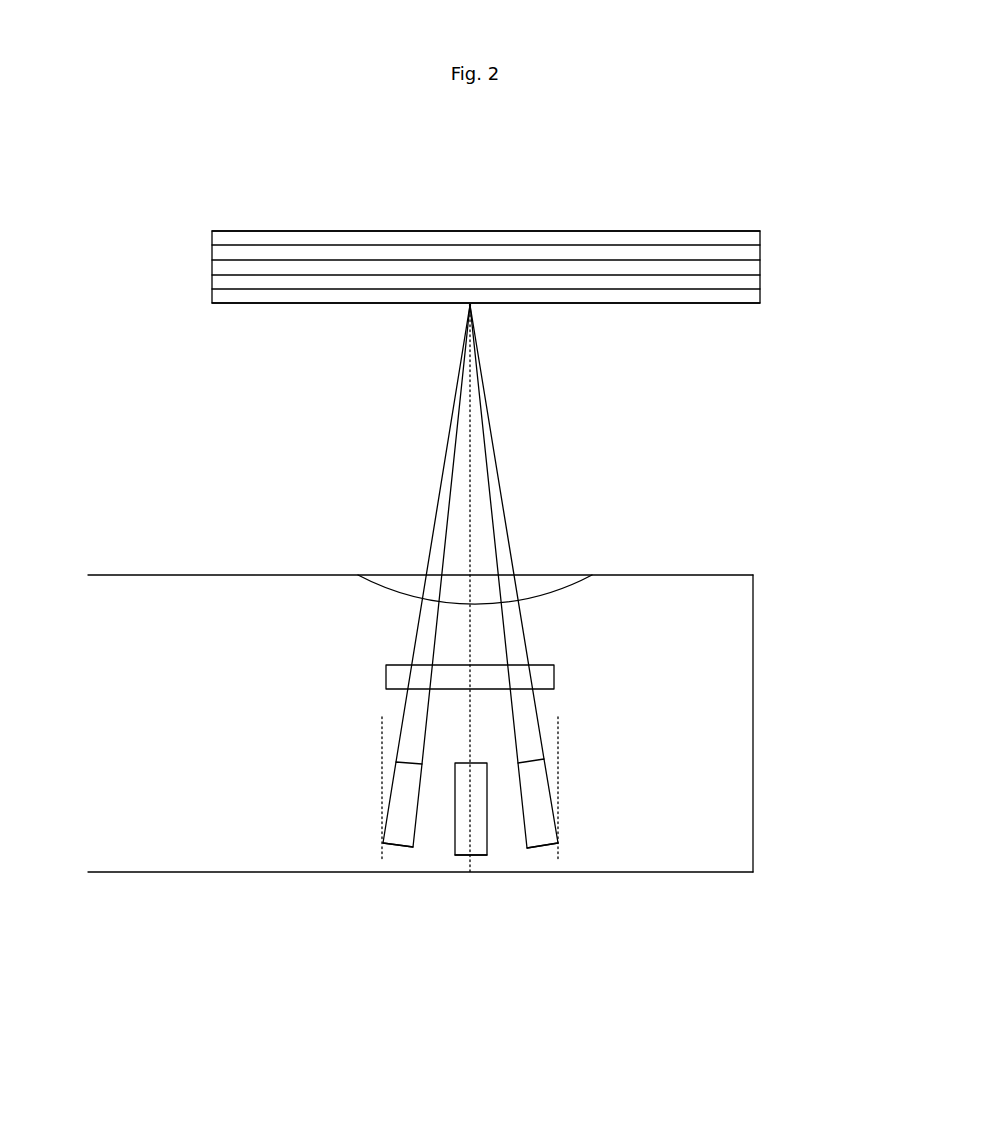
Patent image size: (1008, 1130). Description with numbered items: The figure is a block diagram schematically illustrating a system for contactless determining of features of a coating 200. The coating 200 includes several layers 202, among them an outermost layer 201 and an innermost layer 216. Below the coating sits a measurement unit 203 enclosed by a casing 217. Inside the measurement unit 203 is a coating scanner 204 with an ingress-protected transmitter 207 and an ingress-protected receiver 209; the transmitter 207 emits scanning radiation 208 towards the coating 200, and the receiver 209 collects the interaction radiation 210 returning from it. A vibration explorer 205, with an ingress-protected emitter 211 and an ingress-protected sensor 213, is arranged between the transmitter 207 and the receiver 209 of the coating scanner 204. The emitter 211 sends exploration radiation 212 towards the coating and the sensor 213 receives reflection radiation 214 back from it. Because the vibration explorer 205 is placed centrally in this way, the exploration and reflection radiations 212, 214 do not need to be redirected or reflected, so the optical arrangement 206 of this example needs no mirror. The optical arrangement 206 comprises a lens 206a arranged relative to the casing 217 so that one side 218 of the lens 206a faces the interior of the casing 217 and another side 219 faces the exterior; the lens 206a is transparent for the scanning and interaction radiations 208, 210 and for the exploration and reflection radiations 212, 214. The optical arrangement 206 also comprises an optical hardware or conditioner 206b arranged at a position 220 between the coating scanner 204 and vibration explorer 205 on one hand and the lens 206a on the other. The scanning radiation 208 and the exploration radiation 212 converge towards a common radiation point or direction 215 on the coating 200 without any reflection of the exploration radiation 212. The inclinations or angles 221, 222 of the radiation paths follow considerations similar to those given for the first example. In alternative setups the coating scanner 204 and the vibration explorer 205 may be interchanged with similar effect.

The coating 200 is at (481, 242).
The outermost layer 201 is at (757, 302).
The layers 202 is at (212, 271).
The measurement unit 203 is at (409, 704).
The coating scanner 204 is at (357, 960).
The vibration explorer 205 is at (465, 975).
The optical arrangement 206 is at (424, 545).
The lens 206a is at (475, 612).
The optical hardware or conditioner 206b is at (473, 680).
The ingress-protected transmitter 207 is at (540, 833).
The scanning radiation 208 is at (490, 430).
The ingress-protected receiver 209 is at (400, 833).
The interaction radiation 210 is at (443, 494).
The ingress-protected emitter 211 is at (466, 852).
The exploration radiation 212 is at (468, 532).
The ingress-protected sensor 213 is at (478, 852).
The reflection radiation 214 is at (537, 588).
The common radiation point/direction 215 is at (474, 306).
The innermost layer 216 is at (757, 243).
The casing 217 is at (667, 873).
The side of the lens 218 is at (568, 588).
The another side of the lens 219 is at (532, 573).
The position 220 is at (568, 673).
The inclination or angle 221 is at (550, 750).
The inclination or angle 222 is at (388, 757).